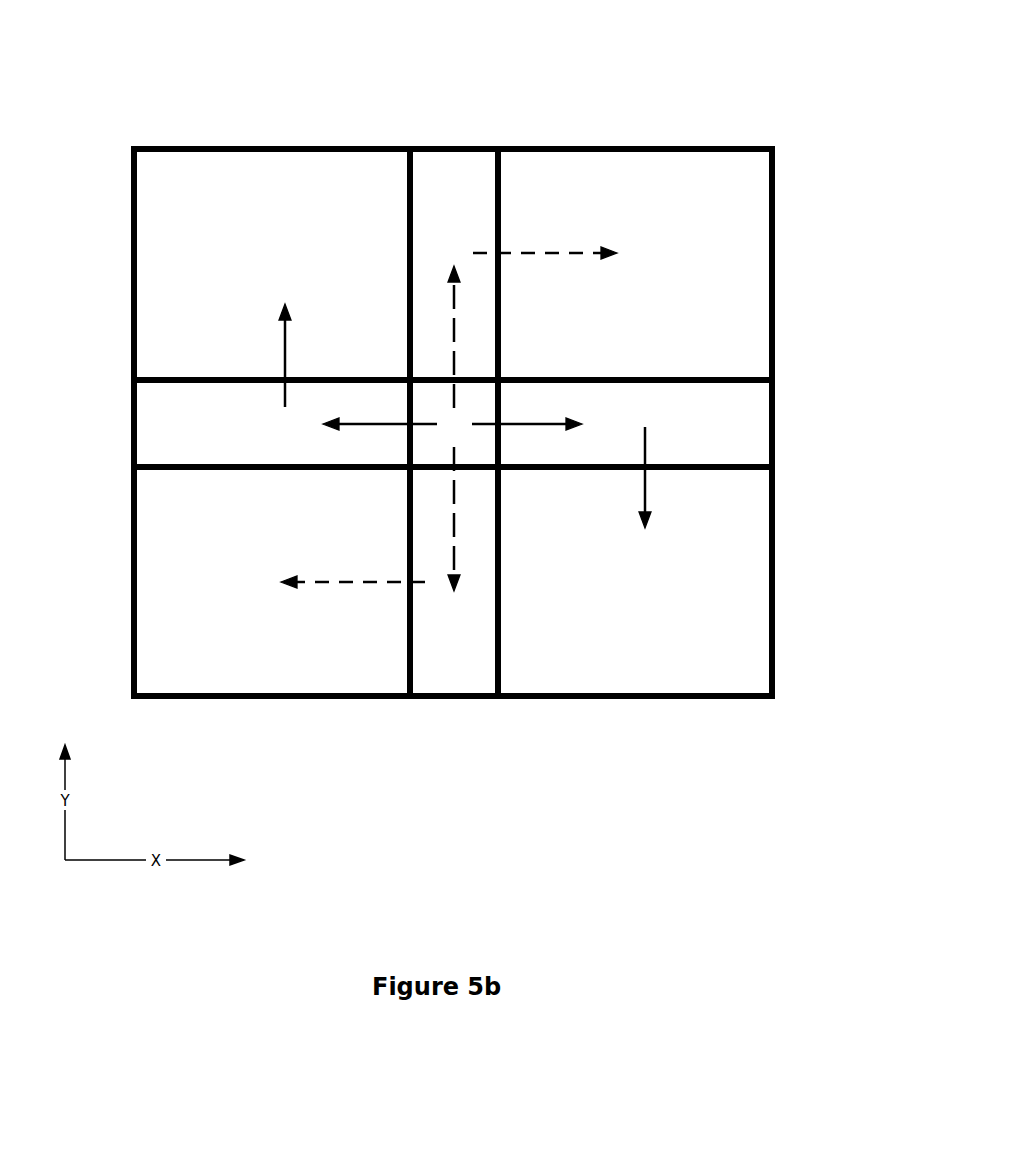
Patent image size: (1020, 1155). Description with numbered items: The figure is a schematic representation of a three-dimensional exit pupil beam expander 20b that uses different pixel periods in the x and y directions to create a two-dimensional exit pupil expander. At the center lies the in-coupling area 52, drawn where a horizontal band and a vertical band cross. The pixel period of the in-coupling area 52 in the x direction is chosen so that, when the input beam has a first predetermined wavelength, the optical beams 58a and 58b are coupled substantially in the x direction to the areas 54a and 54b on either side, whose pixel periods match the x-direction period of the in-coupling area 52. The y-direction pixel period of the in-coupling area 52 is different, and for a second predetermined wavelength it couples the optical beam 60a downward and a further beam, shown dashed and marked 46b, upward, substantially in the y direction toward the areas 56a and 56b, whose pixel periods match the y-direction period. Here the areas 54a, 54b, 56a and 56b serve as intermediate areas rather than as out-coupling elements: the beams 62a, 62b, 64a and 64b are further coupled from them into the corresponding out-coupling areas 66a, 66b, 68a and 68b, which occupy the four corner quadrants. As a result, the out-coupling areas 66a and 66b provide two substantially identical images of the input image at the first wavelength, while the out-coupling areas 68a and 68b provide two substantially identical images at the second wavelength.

The 3-dimensional exit pupil beam expander 20b is at (428, 74).
The dashed upward direction arrow 46b is at (450, 323).
The in-coupling area 52 is at (470, 398).
The area 54a is at (152, 447).
The area 54b is at (747, 430).
The area 56a is at (438, 673).
The area 56b is at (457, 193).
The optical beam 58a is at (360, 423).
The optical beam 58b is at (536, 428).
The optical beam 60a is at (455, 495).
The beam 62a is at (280, 327).
The beam 62b is at (648, 512).
The beam 64a is at (320, 583).
The beam 64b is at (580, 249).
The out-coupling area 66a is at (157, 224).
The out-coupling area 66b is at (717, 668).
The out-coupling area 68a is at (237, 673).
The out-coupling area 68b is at (687, 170).